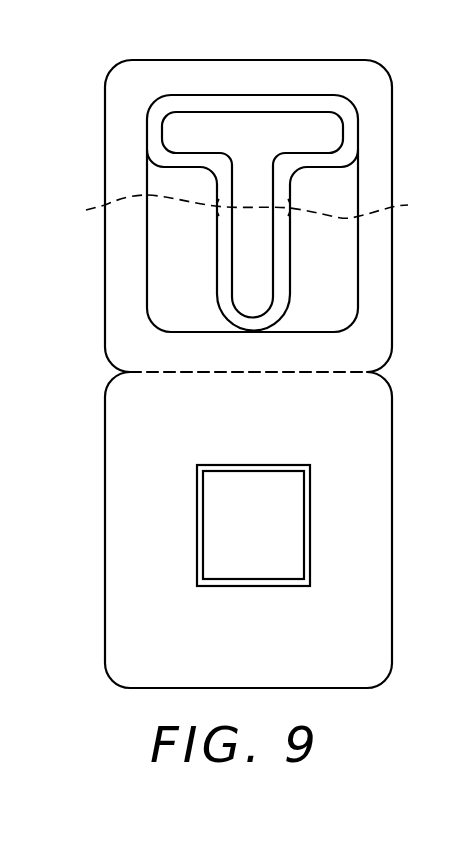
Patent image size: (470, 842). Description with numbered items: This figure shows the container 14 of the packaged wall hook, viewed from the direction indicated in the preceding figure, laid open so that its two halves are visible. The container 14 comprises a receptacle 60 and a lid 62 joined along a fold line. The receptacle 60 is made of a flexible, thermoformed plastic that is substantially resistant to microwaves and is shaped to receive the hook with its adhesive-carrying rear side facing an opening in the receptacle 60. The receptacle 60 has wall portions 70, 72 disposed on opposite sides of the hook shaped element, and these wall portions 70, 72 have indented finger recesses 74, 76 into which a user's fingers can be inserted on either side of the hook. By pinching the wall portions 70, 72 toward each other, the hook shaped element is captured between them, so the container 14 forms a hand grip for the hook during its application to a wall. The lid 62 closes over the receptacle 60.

The container 14 is at (401, 117).
The receptacle 60 is at (335, 265).
The lid 62 is at (353, 430).
The wall portion 70 is at (222, 251).
The wall portion 72 is at (289, 179).
The indented finger recess 74 is at (229, 209).
The indented finger recess 76 is at (327, 205).